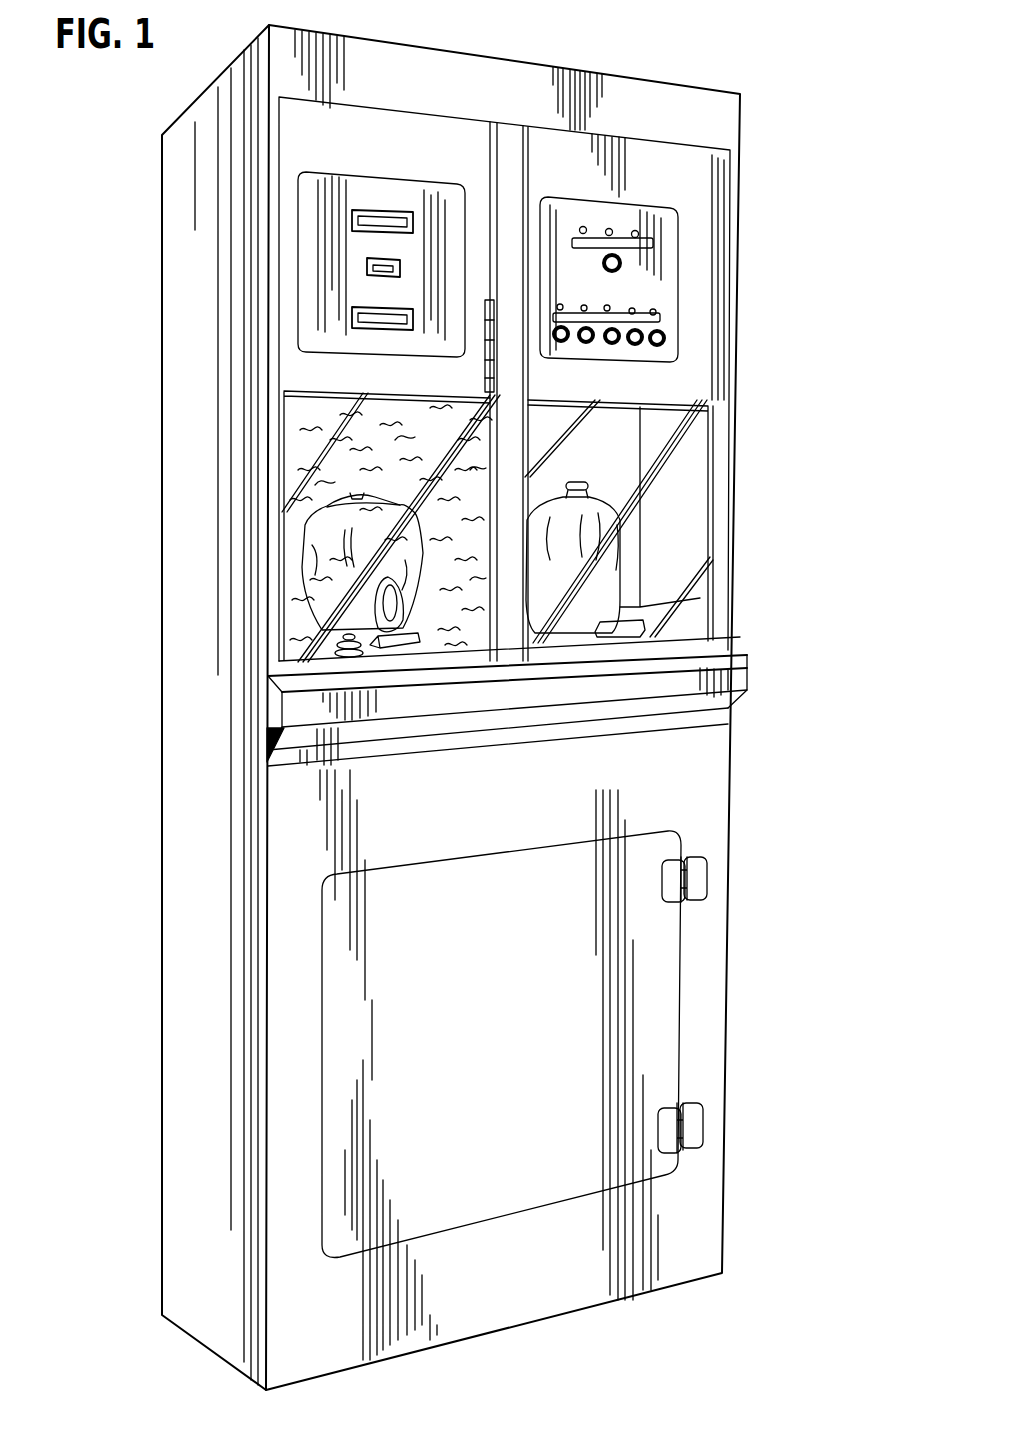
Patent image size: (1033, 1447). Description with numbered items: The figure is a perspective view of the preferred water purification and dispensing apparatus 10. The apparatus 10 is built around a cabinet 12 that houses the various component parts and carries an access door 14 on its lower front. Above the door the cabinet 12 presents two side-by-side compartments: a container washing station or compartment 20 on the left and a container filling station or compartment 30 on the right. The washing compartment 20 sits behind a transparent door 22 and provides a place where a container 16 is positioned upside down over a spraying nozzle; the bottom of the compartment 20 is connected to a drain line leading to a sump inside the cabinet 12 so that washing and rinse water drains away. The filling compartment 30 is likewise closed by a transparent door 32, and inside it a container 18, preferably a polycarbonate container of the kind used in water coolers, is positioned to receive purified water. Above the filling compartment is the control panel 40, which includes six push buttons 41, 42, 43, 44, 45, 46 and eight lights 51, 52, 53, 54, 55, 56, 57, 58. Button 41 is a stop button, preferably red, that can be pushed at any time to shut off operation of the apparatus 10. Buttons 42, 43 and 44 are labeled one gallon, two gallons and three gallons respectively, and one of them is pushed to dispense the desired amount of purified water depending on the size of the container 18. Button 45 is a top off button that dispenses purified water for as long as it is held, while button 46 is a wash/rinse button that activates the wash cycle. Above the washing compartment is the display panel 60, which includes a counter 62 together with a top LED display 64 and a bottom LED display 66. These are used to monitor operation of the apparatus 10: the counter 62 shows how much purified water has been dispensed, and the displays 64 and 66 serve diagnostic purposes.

The water purification and dispensing apparatus 10 is at (742, 753).
The cabinet 12 is at (186, 746).
The access door 14 is at (658, 974).
The container 16 is at (310, 540).
The container 18 is at (610, 574).
The container washing station or compartment 20 is at (297, 452).
The transparent door 22 is at (293, 408).
The container filling station or compartment 30 is at (680, 495).
The transparent door 32 is at (687, 433).
The control panel 40 is at (664, 262).
The stop button 41 is at (552, 333).
The "1 Gal." button 42 is at (585, 343).
The "2 Gal." button 43 is at (612, 344).
The "3 Gal." button 44 is at (637, 344).
The top off button 45 is at (665, 338).
The wash/rinse button 46 is at (622, 261).
The light 51 is at (559, 304).
The light 52 is at (584, 305).
The light 53 is at (614, 297).
The light 54 is at (635, 310).
The light 55 is at (662, 317).
The light 56 is at (583, 226).
The light 57 is at (609, 228).
The light 58 is at (636, 230).
The display panel 60 is at (315, 272).
The counter 62 is at (401, 268).
The top LED display 64 is at (352, 220).
The bottom LED display 66 is at (350, 324).